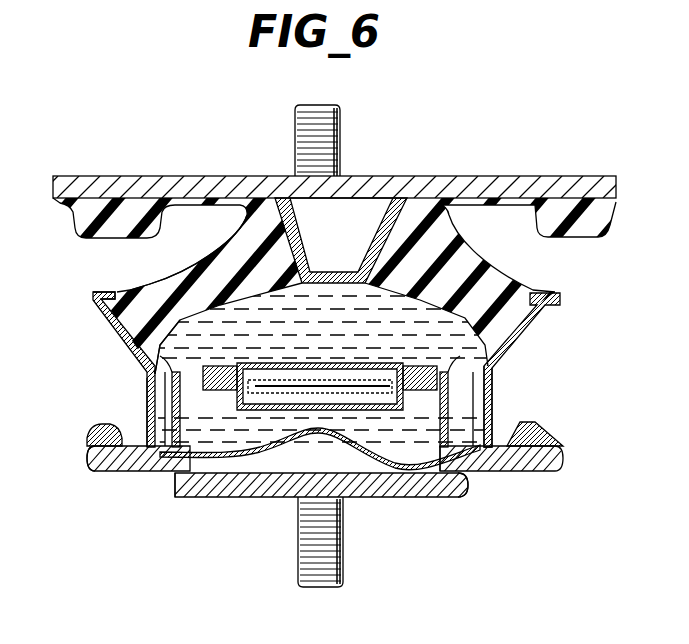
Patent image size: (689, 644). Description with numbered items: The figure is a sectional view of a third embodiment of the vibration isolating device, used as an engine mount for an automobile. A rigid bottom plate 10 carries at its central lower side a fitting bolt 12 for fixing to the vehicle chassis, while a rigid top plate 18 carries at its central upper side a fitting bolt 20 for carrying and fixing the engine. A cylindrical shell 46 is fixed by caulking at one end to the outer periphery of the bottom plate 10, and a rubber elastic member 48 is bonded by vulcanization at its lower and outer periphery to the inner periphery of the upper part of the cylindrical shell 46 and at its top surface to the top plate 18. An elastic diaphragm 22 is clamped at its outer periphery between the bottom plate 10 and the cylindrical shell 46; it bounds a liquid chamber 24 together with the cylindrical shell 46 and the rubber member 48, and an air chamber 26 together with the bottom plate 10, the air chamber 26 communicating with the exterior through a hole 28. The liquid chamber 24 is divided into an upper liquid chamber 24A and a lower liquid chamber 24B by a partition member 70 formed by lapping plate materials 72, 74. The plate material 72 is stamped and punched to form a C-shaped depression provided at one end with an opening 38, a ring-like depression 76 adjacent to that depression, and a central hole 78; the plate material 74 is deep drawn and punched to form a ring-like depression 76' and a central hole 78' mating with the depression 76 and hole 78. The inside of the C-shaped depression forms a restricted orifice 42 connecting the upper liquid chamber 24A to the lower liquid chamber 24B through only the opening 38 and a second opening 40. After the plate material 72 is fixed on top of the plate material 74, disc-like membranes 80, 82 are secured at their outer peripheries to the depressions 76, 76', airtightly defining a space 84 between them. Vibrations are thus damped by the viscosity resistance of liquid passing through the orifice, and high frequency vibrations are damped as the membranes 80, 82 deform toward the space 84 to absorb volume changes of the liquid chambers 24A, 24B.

The bottom plate 10 is at (147, 471).
The fitting bolt 12 is at (347, 573).
The top plate 18 is at (203, 176).
The fitting bolt 20 is at (343, 140).
The elastic diaphragm 22 is at (184, 478).
The liquid chamber 24 is at (450, 263).
The upper liquid chamber 24A is at (142, 366).
The lower liquid chamber 24B is at (210, 470).
The air chamber 26 is at (352, 476).
The hole 28 is at (403, 498).
The opening 38 is at (510, 344).
The opening 40 is at (104, 430).
The orifice 42 is at (497, 368).
The cylindrical shell 46 is at (122, 340).
The rubber elastic member 48 is at (170, 277).
The partition member 70 is at (497, 408).
The plate material 72 is at (146, 396).
The plate material 74 is at (127, 471).
The ring-like depression 76 is at (372, 351).
The ring-like depression 76' is at (485, 486).
The central hole 78 is at (319, 479).
The central hole 78' is at (314, 453).
The membrane 80 is at (472, 262).
The membrane 82 is at (442, 482).
The space 84 is at (95, 305).